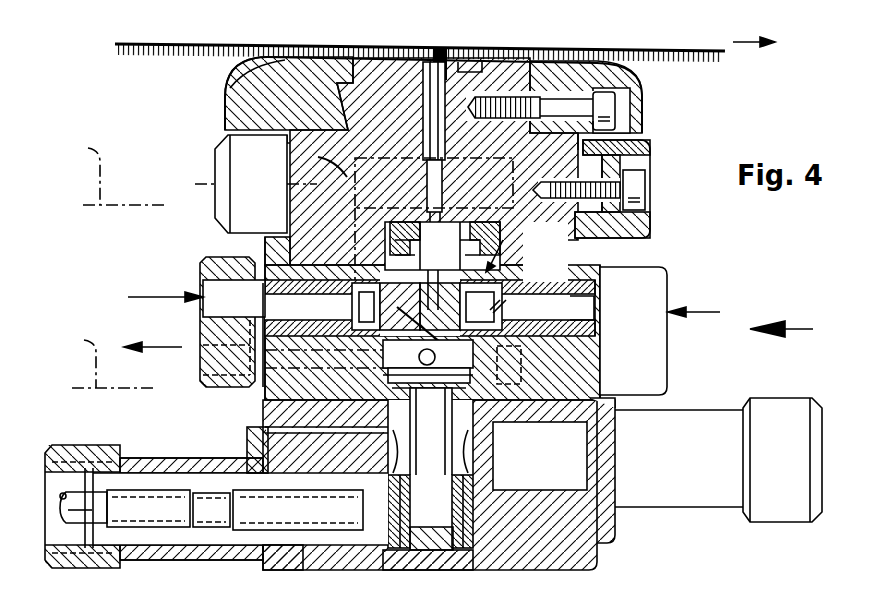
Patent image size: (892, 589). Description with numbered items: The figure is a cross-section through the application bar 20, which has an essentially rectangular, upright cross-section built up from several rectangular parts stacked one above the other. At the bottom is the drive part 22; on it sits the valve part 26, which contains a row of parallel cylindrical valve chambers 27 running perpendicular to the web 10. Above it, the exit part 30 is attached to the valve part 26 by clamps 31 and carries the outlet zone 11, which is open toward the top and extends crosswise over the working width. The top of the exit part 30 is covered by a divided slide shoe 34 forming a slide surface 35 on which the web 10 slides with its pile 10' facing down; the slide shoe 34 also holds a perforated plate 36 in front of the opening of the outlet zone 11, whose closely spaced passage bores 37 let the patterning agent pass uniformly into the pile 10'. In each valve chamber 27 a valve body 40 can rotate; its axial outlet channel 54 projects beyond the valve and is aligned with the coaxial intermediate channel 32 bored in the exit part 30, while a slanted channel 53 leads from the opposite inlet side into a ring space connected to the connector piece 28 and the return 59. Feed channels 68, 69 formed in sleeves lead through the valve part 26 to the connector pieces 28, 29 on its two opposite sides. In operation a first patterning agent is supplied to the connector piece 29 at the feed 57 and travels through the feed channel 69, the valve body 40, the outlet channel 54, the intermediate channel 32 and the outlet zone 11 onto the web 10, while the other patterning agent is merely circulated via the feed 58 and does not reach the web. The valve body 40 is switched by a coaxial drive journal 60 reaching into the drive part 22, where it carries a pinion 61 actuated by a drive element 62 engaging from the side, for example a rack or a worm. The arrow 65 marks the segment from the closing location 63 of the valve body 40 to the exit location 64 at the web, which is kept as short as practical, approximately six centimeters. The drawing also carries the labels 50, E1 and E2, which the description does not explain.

The web 10 is at (448, 70).
The pile 10' is at (445, 84).
The outlet zone 11 is at (424, 113).
The application bar 20 is at (799, 327).
The drive part 22 is at (598, 556).
The valve part 26 is at (590, 362).
The valve chamber 27 is at (450, 271).
The connector piece 28 is at (217, 257).
The connector piece 29 is at (660, 287).
The exit part 30 is at (636, 144).
The clamps 31 is at (235, 160).
The intermediate channel 32 is at (446, 196).
The slide shoe 34 is at (262, 112).
The slide surface 35 is at (226, 72).
The perforated plate 36 is at (478, 62).
The passage bores 37 is at (438, 60).
The valve body 40 is at (512, 378).
The valve seat 50 is at (545, 252).
The slanted channel 53 is at (382, 392).
The outlet channel 54 is at (393, 280).
The feed 57 is at (700, 312).
The feed 58 is at (150, 297).
The return 59 is at (162, 347).
The drive journal 60 is at (442, 457).
The pinion 61 is at (474, 512).
The drive element 62 is at (248, 503).
The closing location 63 is at (520, 284).
The exit location 64 is at (445, 62).
The segment 65 is at (442, 136).
The feed channel 68 is at (306, 300).
The feed channel 69 is at (568, 308).
The section plane E1 is at (106, 360).
The section plane E2 is at (114, 172).